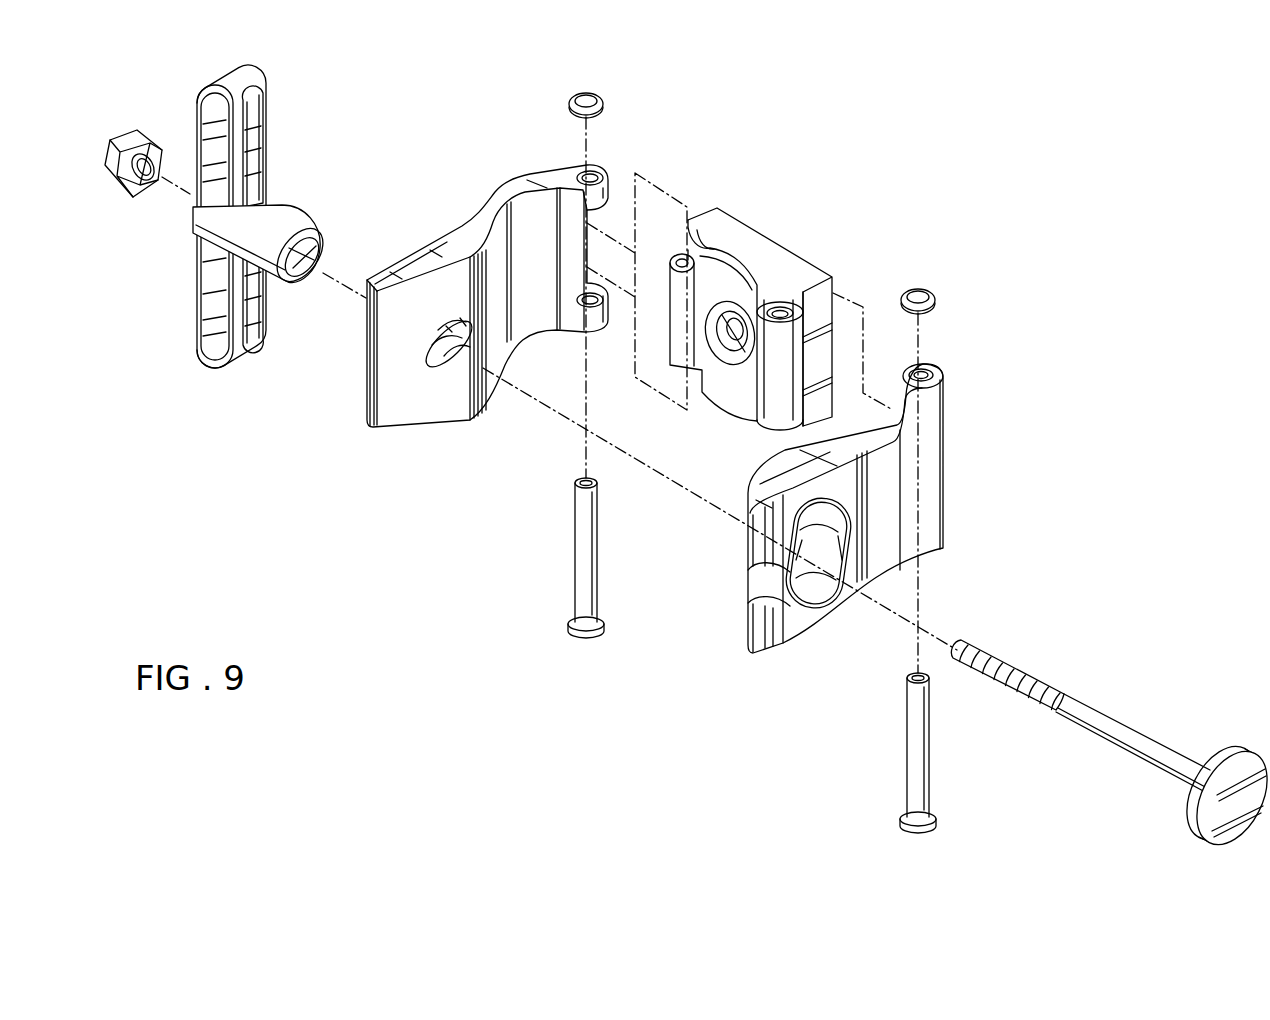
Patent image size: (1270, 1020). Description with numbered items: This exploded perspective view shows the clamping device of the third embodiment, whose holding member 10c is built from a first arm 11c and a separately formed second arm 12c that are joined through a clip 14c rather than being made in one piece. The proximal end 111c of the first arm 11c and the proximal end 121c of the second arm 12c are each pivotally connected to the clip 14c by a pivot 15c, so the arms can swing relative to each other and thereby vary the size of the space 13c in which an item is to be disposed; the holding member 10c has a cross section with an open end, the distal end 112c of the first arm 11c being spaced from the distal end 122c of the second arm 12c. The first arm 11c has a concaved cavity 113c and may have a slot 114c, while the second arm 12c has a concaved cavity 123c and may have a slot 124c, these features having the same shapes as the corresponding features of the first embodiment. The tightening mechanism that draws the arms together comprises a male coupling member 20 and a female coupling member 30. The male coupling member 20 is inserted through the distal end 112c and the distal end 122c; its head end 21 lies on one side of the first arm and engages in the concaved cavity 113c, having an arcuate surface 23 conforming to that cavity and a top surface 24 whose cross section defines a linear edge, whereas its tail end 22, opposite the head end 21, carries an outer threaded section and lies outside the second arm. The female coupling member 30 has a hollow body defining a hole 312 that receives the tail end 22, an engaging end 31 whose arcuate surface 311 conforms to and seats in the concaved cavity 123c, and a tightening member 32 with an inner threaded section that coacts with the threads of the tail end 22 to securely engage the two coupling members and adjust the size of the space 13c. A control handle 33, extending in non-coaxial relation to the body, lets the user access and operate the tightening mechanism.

The holding member 10c is at (458, 658).
The first arm 11c is at (888, 520).
The proximal end of first arm 111c is at (970, 466).
The distal end of first arm 112c is at (729, 666).
The concaved cavity of first arm 113c is at (820, 578).
The slot of first arm 114c is at (770, 590).
The second arm 12c is at (430, 262).
The proximal end of second arm 121c is at (557, 151).
The distal end of second arm 122c is at (340, 406).
The concaved cavity of second arm 123c is at (437, 347).
The slot of second arm 124c is at (457, 362).
The space 13c is at (693, 468).
The clip 14c is at (752, 245).
The pivot 15c is at (578, 570).
The male coupling member 20 is at (1115, 643).
The head end 21 is at (1193, 726).
The tail end 22 is at (1035, 635).
The arcuate surface 23 is at (1221, 757).
The top surface 24 is at (1218, 812).
The female coupling member 30 is at (173, 392).
The engaging end 31 is at (349, 144).
The arcuate surface 311 is at (296, 210).
The hole 312 is at (322, 232).
The tightening member 32 is at (149, 180).
The control handle 33 is at (213, 297).